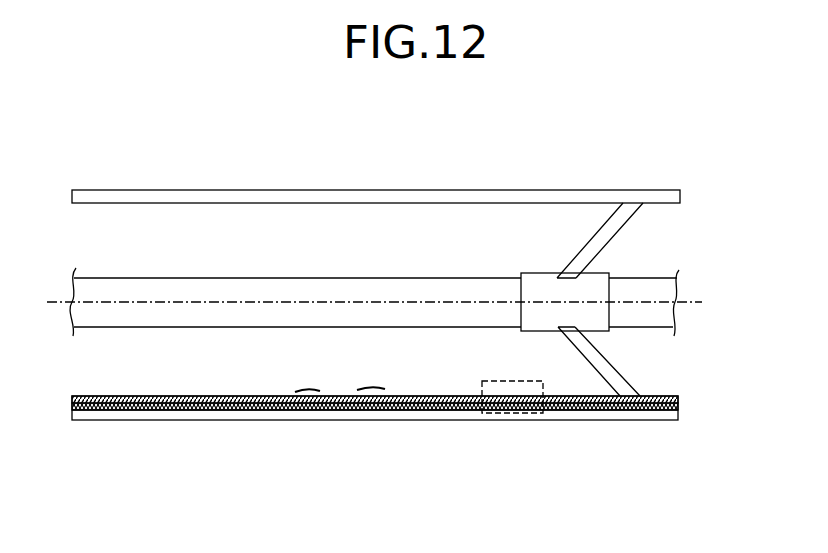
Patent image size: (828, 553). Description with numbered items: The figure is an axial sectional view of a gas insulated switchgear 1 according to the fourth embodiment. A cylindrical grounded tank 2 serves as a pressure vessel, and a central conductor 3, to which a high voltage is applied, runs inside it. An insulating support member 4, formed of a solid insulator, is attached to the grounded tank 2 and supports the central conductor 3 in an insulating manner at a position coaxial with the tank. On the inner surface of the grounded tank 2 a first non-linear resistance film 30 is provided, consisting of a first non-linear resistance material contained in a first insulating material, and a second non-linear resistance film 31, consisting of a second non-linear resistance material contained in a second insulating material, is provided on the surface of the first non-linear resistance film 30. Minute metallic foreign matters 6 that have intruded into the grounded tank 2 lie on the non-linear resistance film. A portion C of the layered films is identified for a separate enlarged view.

The gas insulated switchgear 1 is at (437, 190).
The grounded tank 2 is at (645, 415).
The central conductor 3 is at (656, 278).
The insulating support member 4 is at (607, 366).
The metallic foreign matters 6 is at (309, 388).
The first non-linear resistance film 30 is at (363, 405).
The second non-linear resistance film 31 is at (262, 405).
The portion C is at (537, 416).